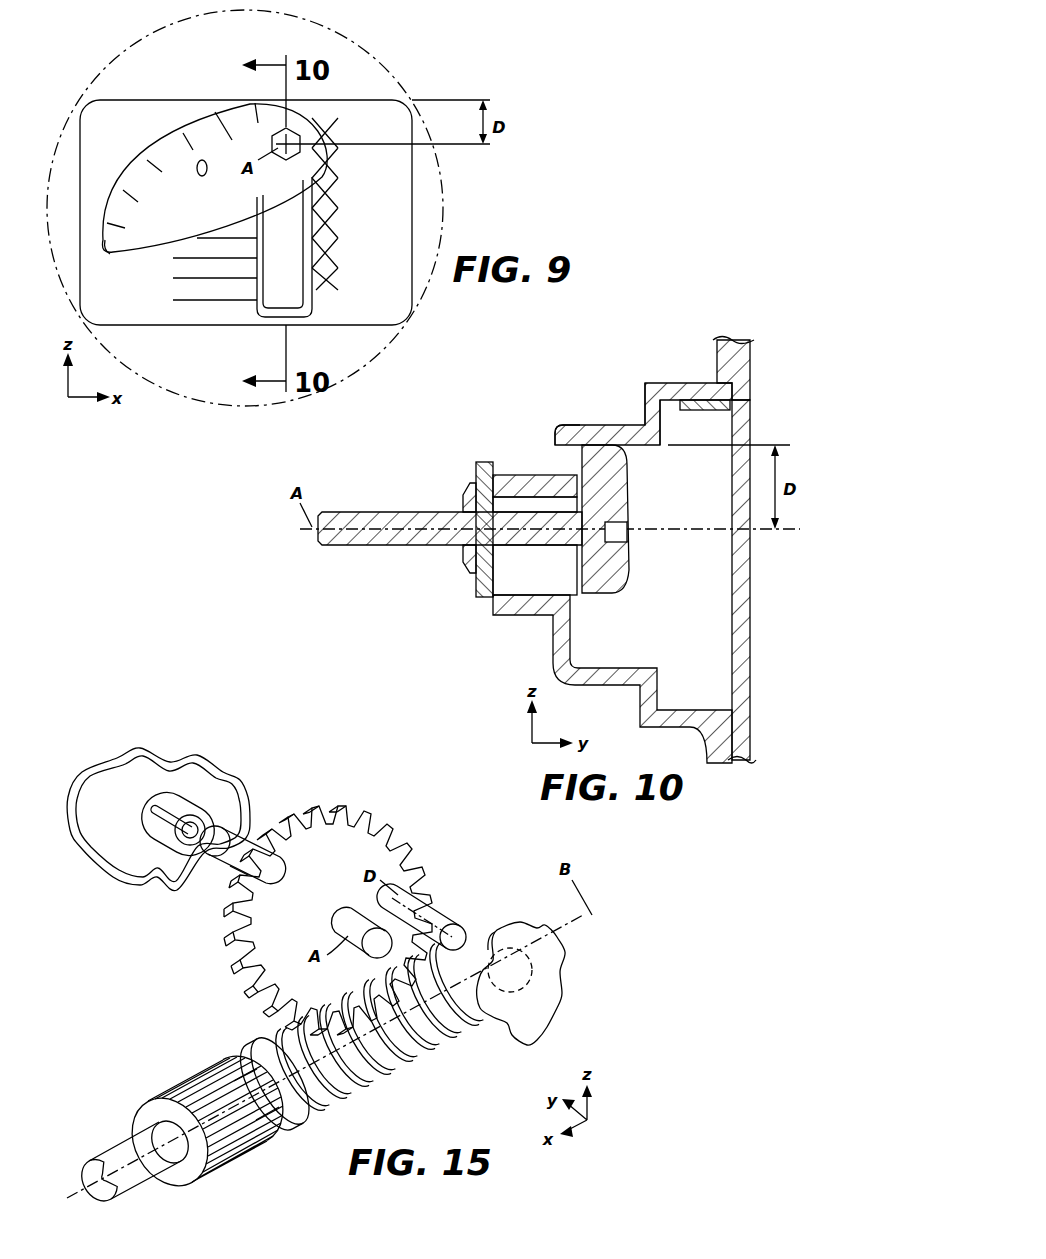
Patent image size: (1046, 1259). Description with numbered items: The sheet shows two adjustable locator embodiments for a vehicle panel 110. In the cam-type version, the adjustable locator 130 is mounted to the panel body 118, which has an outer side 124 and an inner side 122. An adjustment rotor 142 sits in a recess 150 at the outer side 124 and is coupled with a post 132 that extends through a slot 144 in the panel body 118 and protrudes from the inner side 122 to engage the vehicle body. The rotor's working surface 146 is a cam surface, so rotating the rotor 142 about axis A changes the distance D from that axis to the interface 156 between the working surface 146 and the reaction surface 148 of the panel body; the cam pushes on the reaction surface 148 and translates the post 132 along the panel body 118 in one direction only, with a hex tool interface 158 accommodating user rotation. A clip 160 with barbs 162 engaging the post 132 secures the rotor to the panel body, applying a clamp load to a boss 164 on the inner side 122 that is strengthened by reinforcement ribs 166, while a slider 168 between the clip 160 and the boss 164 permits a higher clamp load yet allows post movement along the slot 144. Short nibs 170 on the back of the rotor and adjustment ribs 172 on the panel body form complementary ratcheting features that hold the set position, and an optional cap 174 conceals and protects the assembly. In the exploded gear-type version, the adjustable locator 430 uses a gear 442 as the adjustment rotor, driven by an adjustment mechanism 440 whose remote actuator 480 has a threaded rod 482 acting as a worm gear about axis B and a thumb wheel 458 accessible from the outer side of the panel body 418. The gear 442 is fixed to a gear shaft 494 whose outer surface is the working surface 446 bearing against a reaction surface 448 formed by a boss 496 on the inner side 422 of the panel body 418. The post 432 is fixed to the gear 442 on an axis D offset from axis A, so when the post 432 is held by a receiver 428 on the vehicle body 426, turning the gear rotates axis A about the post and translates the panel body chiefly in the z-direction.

In FIG. 10, the panel 110 is at (706, 322).
In FIG. 9, the panel body 118 is at (343, 40).
In FIG. 10, the panel body 118 is at (717, 362).
In FIG. 10, the inner side 122 is at (605, 425).
In FIG. 9, the outer side 124 is at (380, 82).
In FIG. 10, the outer side 124 is at (745, 352).
In FIG. 9, the adjustable locator 130 is at (208, 105).
In FIG. 10, the adjustable locator 130 is at (574, 465).
In FIG. 10, the post 132 is at (382, 512).
In FIG. 9, the adjustment rotor 142 is at (134, 243).
In FIG. 10, the adjustment rotor 142 is at (627, 578).
In FIG. 9, the slot 144 is at (288, 268).
In FIG. 9, the working surface 146 is at (138, 172).
In FIG. 10, the working surface 146 is at (590, 428).
In FIG. 9, the reaction surface 148 is at (323, 103).
In FIG. 10, the reaction surface 148 is at (650, 445).
In FIG. 10, the recess 150 is at (655, 420).
In FIG. 9, the interface 156 is at (258, 102).
In FIG. 9, the hex tool interface 158 is at (298, 158).
In FIG. 10, the clip 160 is at (463, 495).
In FIG. 10, the barbs 162 is at (463, 560).
In FIG. 10, the boss 164 is at (493, 605).
In FIG. 10, the reinforcement ribs 166 is at (553, 655).
In FIG. 10, the slider 168 is at (485, 462).
In FIG. 10, the nibs 170 is at (600, 568).
In FIG. 9, the adjustment ribs 172 is at (212, 300).
In FIG. 10, the cap 174 is at (732, 592).
In FIG. 15, the panel body 418 is at (120, 772).
In FIG. 15, the inner side 422 is at (238, 815).
In FIG. 15, the vehicle body 426 is at (548, 1015).
In FIG. 15, the receiver 428 is at (490, 928).
In FIG. 15, the adjustable locator 430 is at (437, 892).
In FIG. 15, the post 432 is at (455, 922).
In FIG. 15, the adjustment mechanism 440 is at (236, 1038).
In FIG. 15, the gear 442 is at (373, 822).
In FIG. 15, the working surface 446 is at (248, 850).
In FIG. 15, the reaction surface 448 is at (178, 840).
In FIG. 15, the thumb wheel 458 is at (143, 1106).
In FIG. 15, the remote actuator 480 is at (300, 1115).
In FIG. 15, the threaded rod 482 is at (420, 1058).
In FIG. 15, the gear shaft 494 is at (222, 876).
In FIG. 15, the boss 496 is at (148, 806).